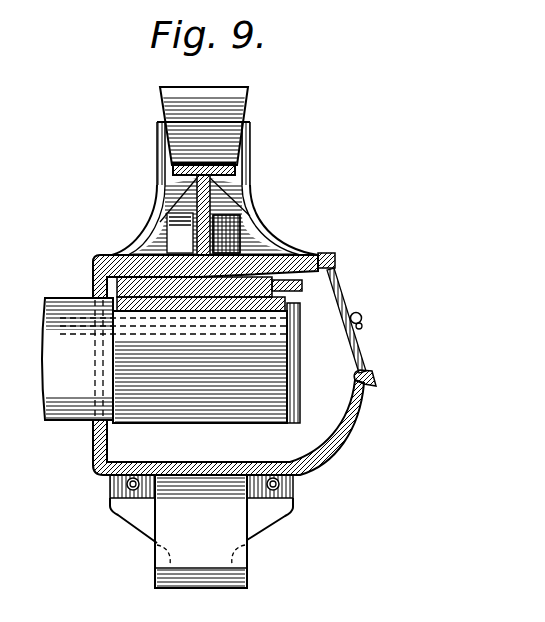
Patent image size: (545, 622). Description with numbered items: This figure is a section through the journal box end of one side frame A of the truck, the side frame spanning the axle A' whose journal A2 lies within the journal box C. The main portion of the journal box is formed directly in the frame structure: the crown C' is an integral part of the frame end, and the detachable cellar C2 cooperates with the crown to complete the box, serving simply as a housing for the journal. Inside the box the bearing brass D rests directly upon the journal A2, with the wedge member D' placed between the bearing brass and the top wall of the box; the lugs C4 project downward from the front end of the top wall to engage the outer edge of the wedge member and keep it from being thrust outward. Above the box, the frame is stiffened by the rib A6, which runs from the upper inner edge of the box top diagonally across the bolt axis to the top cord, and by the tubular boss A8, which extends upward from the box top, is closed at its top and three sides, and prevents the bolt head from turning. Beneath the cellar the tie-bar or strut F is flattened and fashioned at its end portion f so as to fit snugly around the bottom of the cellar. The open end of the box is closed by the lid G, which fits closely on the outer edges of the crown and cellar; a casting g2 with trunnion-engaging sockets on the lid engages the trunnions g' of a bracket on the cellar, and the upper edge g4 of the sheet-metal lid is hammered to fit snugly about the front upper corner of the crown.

The side frame A is at (221, 136).
The rib A6 is at (245, 236).
The tubular boss A8 is at (185, 234).
The journal A2 is at (180, 363).
The axle A' is at (59, 383).
The journal box C is at (239, 422).
The crown C' is at (193, 259).
The cellar C2 is at (328, 453).
The lugs C4 is at (309, 255).
The lid G is at (346, 302).
The upper edge g4 is at (332, 259).
The casting g2 is at (364, 325).
The trunnions g' is at (9, 292).
The bearing brass D is at (201, 332).
The wedge member D' is at (209, 322).
The tie-bar or strut F is at (160, 513).
The flattened end portion f is at (126, 484).